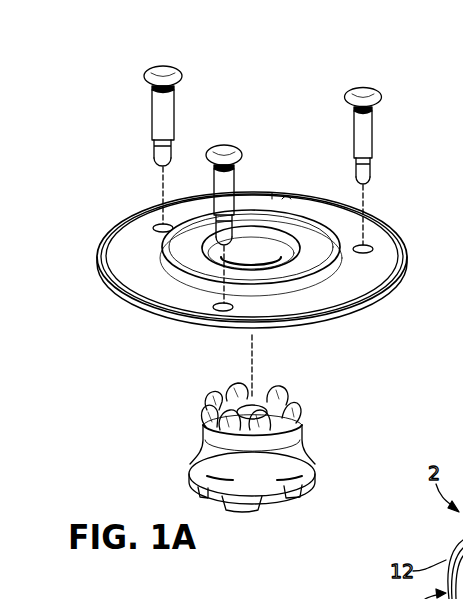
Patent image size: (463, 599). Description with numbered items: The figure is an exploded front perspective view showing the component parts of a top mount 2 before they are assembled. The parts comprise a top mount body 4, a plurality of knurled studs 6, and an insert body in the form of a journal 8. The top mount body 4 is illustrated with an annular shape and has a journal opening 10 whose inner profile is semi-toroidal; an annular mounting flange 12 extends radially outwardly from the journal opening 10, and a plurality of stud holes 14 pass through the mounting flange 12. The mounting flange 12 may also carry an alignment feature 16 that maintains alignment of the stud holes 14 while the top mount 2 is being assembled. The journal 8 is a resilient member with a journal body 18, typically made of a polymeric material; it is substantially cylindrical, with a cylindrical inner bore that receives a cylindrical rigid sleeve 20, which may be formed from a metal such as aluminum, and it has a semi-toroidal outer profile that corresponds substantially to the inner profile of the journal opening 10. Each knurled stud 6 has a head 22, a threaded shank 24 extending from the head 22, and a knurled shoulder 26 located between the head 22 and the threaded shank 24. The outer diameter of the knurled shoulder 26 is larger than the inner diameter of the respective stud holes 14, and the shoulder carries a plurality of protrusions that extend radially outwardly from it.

The top mount 2 is at (123, 130).
The top mount body 4 is at (92, 254).
The knurled stud 6 is at (387, 139).
The journal 8 is at (224, 429).
The journal opening 10 is at (260, 248).
The mounting flange 12 is at (131, 240).
The stud hole 14 is at (370, 248).
The alignment feature 16 is at (292, 200).
The journal body 18 is at (210, 440).
The rigid sleeve 20 is at (253, 409).
The head 22 is at (383, 93).
The threaded shank 24 is at (375, 143).
The knurled shoulder 26 is at (377, 108).